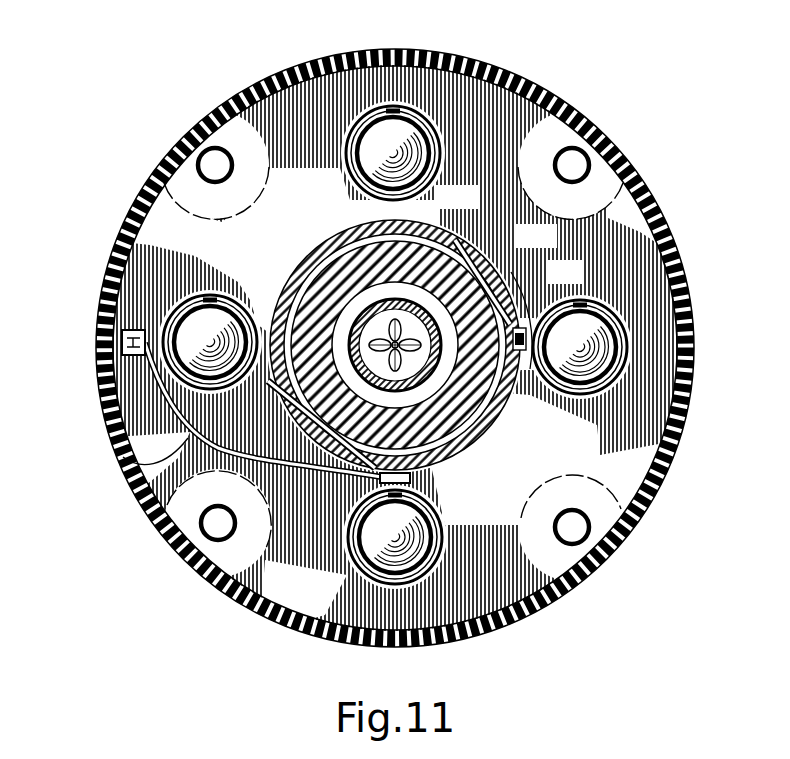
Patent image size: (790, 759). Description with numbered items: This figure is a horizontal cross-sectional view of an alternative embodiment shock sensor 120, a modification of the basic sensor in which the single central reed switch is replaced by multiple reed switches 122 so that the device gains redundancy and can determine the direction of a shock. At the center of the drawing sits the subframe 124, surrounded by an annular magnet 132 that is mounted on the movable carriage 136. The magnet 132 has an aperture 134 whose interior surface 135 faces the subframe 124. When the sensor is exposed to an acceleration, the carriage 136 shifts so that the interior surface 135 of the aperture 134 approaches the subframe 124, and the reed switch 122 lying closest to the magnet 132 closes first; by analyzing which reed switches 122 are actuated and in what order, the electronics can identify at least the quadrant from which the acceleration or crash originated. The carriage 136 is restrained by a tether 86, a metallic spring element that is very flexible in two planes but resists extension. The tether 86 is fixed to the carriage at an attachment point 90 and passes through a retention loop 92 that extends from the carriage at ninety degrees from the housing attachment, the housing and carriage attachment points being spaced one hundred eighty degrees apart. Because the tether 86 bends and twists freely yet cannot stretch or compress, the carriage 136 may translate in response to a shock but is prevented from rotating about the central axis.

The shock sensor 120 is at (628, 100).
The carriage 136 is at (321, 243).
The interior surface 135 is at (318, 265).
The reed switches 122 is at (462, 232).
The subframe 124 is at (350, 332).
The magnet 132 is at (494, 265).
The aperture 134 is at (470, 445).
The attachment point 90 is at (521, 330).
The tether 86 is at (126, 460).
The retention loop 92 is at (410, 479).